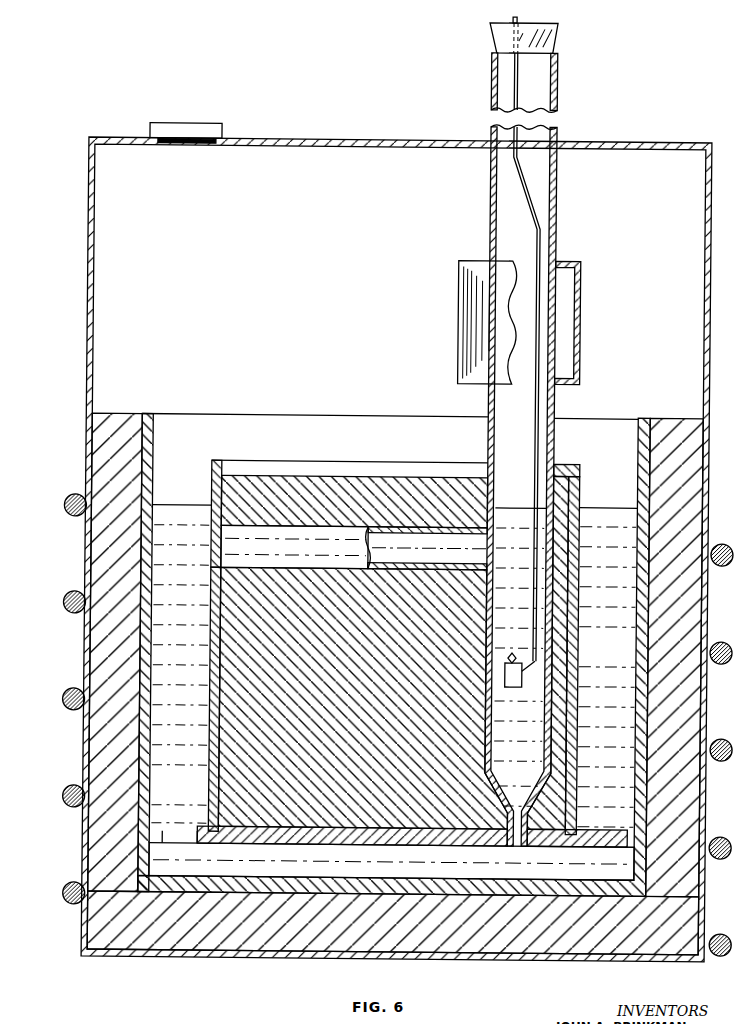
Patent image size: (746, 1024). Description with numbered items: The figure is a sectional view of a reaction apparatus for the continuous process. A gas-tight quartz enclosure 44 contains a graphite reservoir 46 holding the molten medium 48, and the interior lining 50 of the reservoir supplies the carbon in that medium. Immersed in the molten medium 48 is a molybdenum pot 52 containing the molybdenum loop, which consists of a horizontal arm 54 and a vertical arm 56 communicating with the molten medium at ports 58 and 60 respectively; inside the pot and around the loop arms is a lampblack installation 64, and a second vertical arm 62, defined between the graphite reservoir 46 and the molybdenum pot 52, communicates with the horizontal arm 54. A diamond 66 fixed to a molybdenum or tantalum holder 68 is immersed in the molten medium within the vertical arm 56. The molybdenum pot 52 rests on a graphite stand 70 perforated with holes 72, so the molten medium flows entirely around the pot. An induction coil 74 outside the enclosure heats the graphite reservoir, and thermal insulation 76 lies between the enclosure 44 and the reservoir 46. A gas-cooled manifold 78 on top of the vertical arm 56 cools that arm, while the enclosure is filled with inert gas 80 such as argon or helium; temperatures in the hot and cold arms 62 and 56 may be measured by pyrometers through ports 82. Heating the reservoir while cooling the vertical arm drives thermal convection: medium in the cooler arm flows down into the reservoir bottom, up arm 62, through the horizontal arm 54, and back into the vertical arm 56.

The gas-tight quartz enclosure 44 is at (85, 322).
The graphite reservoir 46 is at (147, 414).
The molten medium 48 is at (394, 655).
The interior lining 50 is at (152, 455).
The molybdenum pot 52 is at (221, 522).
The horizontal arm 54 is at (400, 527).
The vertical arm 56 is at (487, 650).
The port 58 is at (211, 541).
The port 60 is at (515, 845).
The second vertical arm 62 is at (211, 604).
The lampblack installation 64 is at (393, 651).
The diamond 66 is at (514, 652).
The holder 68 is at (533, 423).
The graphite stand 70 is at (345, 833).
The holes 72 is at (185, 836).
The induction coil 74 is at (66, 708).
The thermal insulation 76 is at (395, 684).
The gas-cooled manifold 78 is at (579, 310).
The inert gas 80 is at (282, 283).
The ports 82 is at (180, 128).